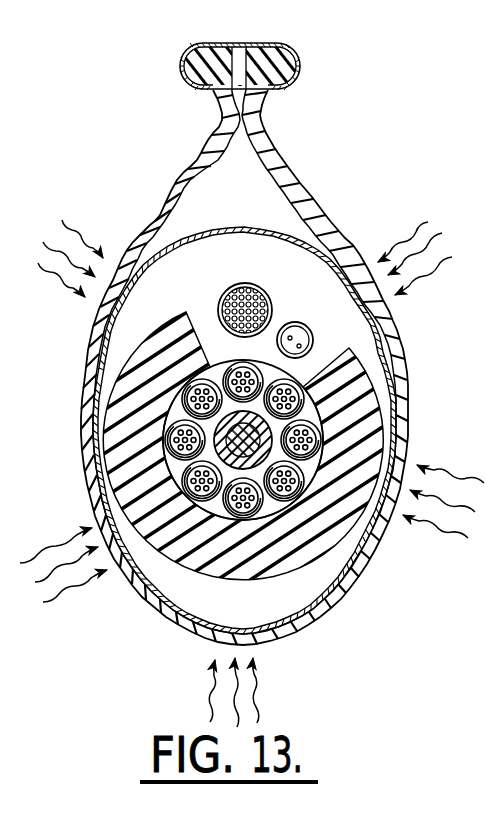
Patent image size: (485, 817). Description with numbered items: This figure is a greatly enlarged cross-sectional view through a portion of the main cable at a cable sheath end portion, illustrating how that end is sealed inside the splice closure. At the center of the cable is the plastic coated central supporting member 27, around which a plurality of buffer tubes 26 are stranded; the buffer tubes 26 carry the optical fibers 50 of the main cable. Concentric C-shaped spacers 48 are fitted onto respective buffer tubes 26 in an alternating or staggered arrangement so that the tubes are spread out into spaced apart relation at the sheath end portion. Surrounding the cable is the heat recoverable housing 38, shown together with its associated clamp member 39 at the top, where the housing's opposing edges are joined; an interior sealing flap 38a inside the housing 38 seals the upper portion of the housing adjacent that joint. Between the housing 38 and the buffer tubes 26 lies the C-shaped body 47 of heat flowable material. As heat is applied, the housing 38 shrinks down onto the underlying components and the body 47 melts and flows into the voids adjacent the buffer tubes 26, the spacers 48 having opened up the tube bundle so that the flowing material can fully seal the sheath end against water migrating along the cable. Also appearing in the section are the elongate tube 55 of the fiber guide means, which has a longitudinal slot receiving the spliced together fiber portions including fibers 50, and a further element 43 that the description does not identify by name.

The clamp member 39 is at (262, 43).
The heat recoverable housing 38 is at (327, 234).
The interior sealing flap 38a is at (257, 226).
The C-shaped body of heat flowable material 47 is at (352, 425).
The central supporting member 27 is at (218, 433).
The buffer tubes 26 is at (113, 490).
The C-shaped spacers 48 is at (304, 458).
The stranded cable 43 is at (264, 291).
The optical fibers 50 is at (301, 347).
The elongate tube 55 is at (292, 339).